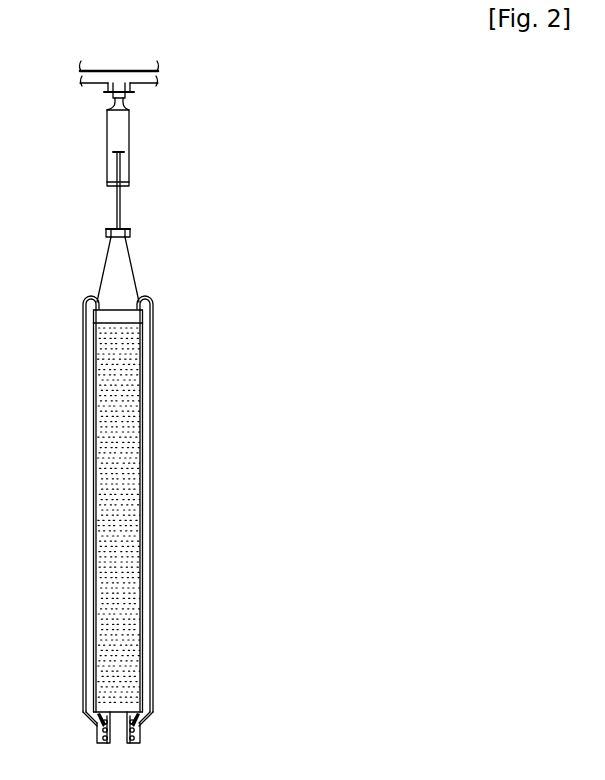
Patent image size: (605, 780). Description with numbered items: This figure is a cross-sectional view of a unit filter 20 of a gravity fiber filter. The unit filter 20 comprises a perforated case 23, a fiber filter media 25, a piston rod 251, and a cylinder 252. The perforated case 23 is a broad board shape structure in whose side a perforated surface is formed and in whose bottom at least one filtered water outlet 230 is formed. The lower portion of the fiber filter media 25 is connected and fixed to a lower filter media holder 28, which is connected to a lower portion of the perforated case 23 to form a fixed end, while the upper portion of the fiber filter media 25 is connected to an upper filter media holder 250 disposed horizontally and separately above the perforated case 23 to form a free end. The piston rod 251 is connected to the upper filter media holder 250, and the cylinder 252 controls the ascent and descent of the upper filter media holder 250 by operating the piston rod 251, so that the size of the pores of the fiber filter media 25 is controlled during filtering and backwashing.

The unit filter 20 is at (150, 411).
The perforated case 23 is at (132, 469).
The fiber filter media 25 is at (147, 505).
The lower filter media holder 28 is at (97, 728).
The filtered water outlet 230 is at (141, 741).
The upper filter media holder 250 is at (106, 233).
The piston rod 251 is at (121, 209).
The cylinder 252 is at (123, 121).